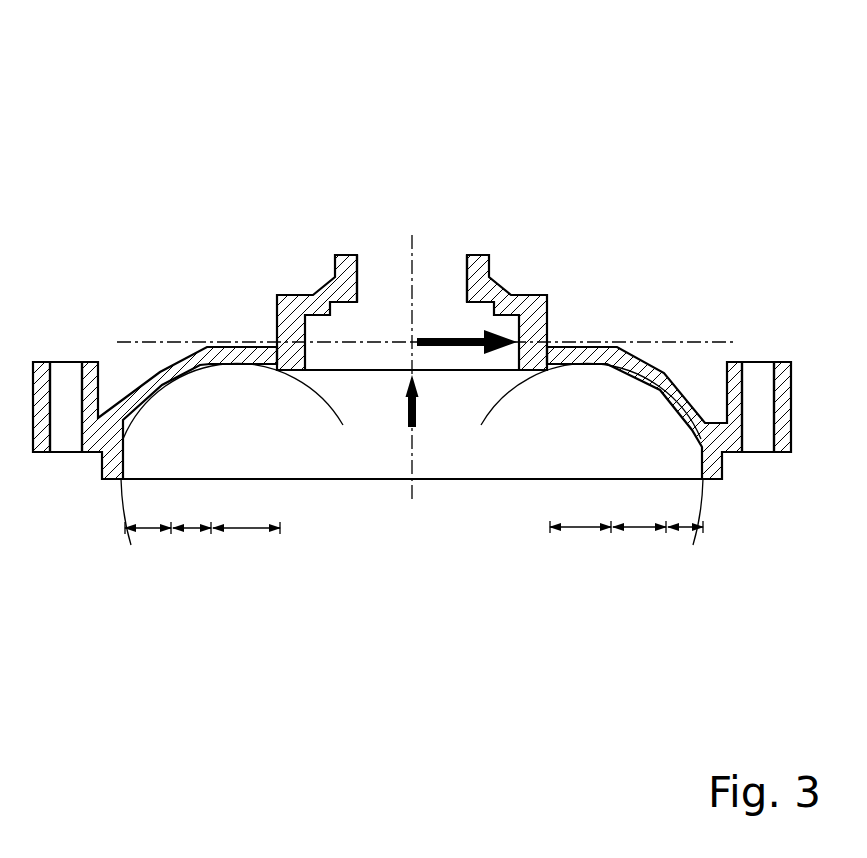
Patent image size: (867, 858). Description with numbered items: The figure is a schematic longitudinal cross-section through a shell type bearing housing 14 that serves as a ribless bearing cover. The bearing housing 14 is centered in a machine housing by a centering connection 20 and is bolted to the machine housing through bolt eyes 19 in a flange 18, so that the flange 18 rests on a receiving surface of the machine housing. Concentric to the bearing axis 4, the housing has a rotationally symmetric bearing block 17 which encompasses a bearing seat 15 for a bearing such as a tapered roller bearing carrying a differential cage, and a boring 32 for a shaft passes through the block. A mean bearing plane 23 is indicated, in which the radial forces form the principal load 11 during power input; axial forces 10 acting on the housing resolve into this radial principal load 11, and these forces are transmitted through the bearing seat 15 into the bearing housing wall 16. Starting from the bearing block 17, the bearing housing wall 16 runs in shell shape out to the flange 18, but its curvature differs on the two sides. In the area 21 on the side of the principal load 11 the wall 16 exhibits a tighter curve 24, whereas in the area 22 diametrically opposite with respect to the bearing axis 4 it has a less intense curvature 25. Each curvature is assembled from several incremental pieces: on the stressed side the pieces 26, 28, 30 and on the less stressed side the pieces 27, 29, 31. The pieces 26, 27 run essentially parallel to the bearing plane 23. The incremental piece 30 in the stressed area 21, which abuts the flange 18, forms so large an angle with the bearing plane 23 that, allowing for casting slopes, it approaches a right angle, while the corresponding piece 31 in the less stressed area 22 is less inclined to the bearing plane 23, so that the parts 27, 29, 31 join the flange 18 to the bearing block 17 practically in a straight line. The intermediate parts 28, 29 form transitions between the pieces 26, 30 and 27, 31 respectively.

The bearing axis 4 is at (413, 428).
The axial forces 10 is at (417, 410).
The radial principal load 11 is at (457, 330).
The bearing housing 14 is at (340, 240).
The bearing seat 15 is at (320, 330).
The bearing housing wall 16 is at (597, 345).
The bearing block 17 is at (510, 293).
The flange 18 is at (70, 453).
The bolt eyes 19 is at (783, 362).
The centering connection 20 is at (716, 480).
The area on the side of the principal load 21 is at (649, 343).
The diametrically opposite area 22 is at (170, 337).
The mean bearing plane 23 is at (228, 342).
The tighter curve 24 is at (519, 397).
The less intense curvature 25 is at (332, 408).
The incremental piece 26 is at (580, 530).
The incremental piece 27 is at (250, 530).
The incremental part 28 is at (638, 530).
The incremental part 29 is at (193, 530).
The incremental piece 30 is at (683, 530).
The incremental piece 31 is at (147, 530).
The boring 32 is at (390, 273).